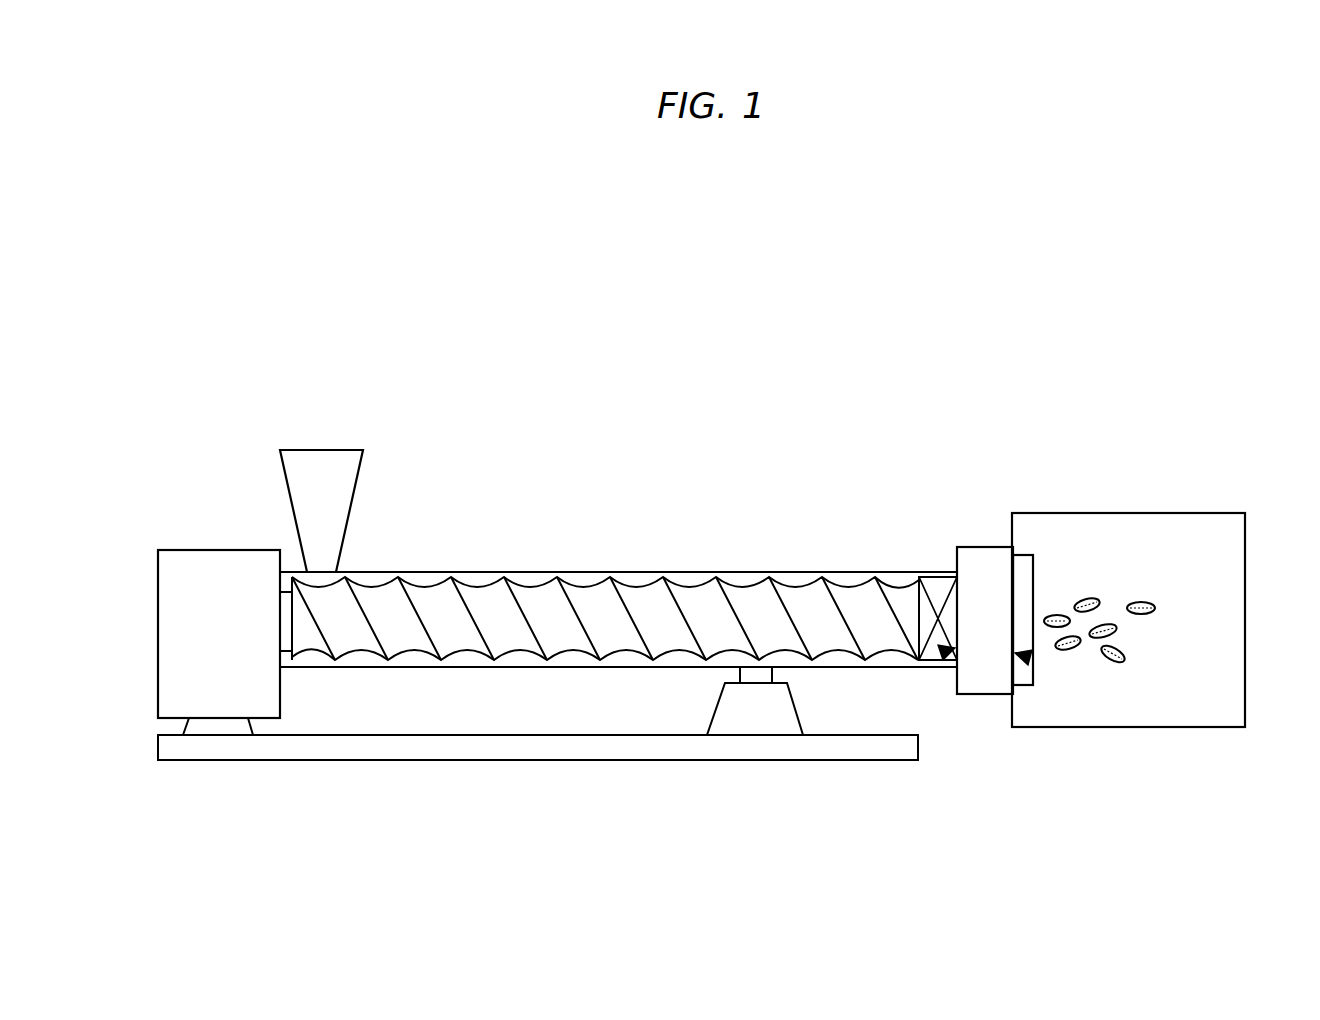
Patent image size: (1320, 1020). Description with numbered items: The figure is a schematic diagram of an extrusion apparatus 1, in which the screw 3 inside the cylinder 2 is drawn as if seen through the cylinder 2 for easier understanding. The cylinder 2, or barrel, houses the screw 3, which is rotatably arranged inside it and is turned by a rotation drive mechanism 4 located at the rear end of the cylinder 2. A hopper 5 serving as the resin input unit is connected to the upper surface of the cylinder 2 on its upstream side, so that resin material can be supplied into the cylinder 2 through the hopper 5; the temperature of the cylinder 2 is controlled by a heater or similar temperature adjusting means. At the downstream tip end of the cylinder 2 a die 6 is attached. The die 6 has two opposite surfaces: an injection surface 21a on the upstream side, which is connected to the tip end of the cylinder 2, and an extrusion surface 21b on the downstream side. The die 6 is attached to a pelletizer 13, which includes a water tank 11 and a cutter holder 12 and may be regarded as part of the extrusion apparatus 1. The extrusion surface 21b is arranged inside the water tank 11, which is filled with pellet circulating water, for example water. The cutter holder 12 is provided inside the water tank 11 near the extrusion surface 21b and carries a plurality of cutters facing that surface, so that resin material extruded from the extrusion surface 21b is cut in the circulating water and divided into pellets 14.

The extrusion apparatus 1 is at (158, 317).
The cylinder 2 is at (410, 570).
The screw 3 is at (488, 620).
The rotation drive mechanism 4 is at (238, 565).
The hopper 5 is at (318, 460).
The die 6 is at (985, 575).
The water tank 11 is at (1118, 553).
The cutter holder 12 is at (1020, 575).
The pelletizer 13 is at (1143, 470).
The pellets 14 is at (1114, 662).
The injection surface 21a is at (945, 655).
The extrusion surface 21b is at (1030, 658).